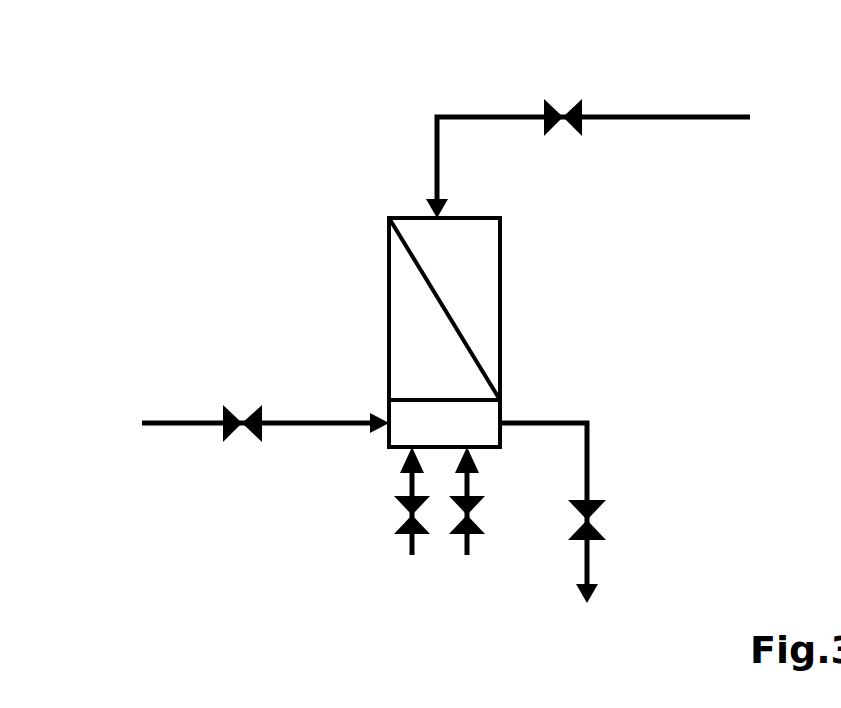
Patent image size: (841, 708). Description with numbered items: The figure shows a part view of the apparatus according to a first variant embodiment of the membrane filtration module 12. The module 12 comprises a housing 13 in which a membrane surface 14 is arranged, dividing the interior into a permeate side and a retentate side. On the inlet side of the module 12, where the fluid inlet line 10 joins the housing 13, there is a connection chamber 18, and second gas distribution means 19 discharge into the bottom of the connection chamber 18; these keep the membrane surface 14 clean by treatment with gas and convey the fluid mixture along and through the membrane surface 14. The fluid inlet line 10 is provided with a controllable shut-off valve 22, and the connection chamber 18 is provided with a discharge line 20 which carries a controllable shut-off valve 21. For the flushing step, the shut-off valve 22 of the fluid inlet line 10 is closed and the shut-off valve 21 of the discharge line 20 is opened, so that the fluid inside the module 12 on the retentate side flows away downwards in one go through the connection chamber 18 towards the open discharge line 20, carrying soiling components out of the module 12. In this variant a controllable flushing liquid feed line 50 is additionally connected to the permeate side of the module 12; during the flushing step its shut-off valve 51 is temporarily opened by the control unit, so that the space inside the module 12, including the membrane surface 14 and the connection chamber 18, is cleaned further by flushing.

The fluid inlet line 10 is at (153, 427).
The membrane filtration module 12 is at (518, 267).
The housing 13 is at (387, 357).
The membrane surface 14 is at (470, 345).
The connection chamber 18 is at (377, 437).
The second gas distribution means 19 is at (408, 543).
The discharge line 20 is at (588, 563).
The controllable shut-off valve 21 is at (597, 502).
The controllable shut-off valve 22 is at (222, 417).
The controllable flushing liquid feed line 50 is at (705, 112).
The shut-off valve 51 is at (553, 107).